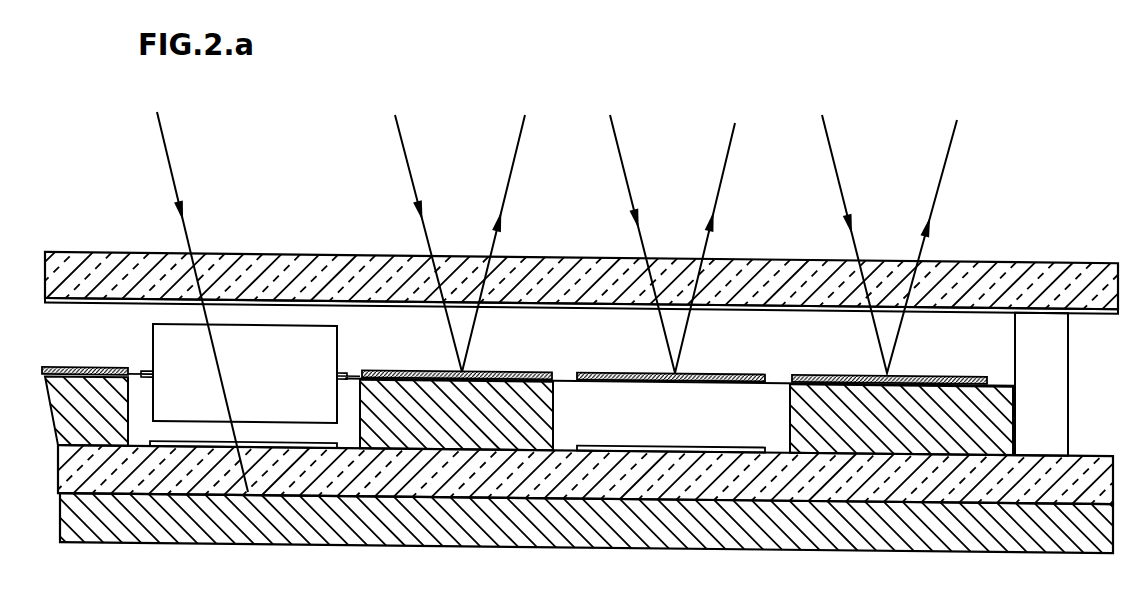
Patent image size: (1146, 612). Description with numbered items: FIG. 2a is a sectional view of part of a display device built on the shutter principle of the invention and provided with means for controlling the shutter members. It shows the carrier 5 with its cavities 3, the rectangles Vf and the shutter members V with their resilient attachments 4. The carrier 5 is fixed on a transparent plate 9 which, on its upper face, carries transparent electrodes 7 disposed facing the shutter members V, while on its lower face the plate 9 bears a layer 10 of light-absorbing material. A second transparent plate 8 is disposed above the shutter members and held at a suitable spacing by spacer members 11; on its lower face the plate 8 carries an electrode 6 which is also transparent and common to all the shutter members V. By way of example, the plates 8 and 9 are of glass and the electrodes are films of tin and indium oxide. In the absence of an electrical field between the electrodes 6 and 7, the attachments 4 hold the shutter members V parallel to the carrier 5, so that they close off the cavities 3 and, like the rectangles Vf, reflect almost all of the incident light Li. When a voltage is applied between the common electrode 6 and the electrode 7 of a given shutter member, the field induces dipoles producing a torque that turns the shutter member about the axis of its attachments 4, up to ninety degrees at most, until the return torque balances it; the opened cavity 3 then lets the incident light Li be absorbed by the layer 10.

The cavity 3 is at (345, 432).
The resilient attachment 4 is at (347, 373).
The carrier 5 is at (453, 420).
The electrode 6 is at (105, 303).
The transparent electrode 7 is at (192, 440).
The second transparent plate 8 is at (352, 278).
The transparent plate 9 is at (287, 478).
The layer of light-absorbing material 10 is at (853, 523).
The spacer member 11 is at (1040, 337).
The shutter member V is at (258, 338).
The rectangle Vf is at (487, 372).
The incident light Li is at (452, 128).